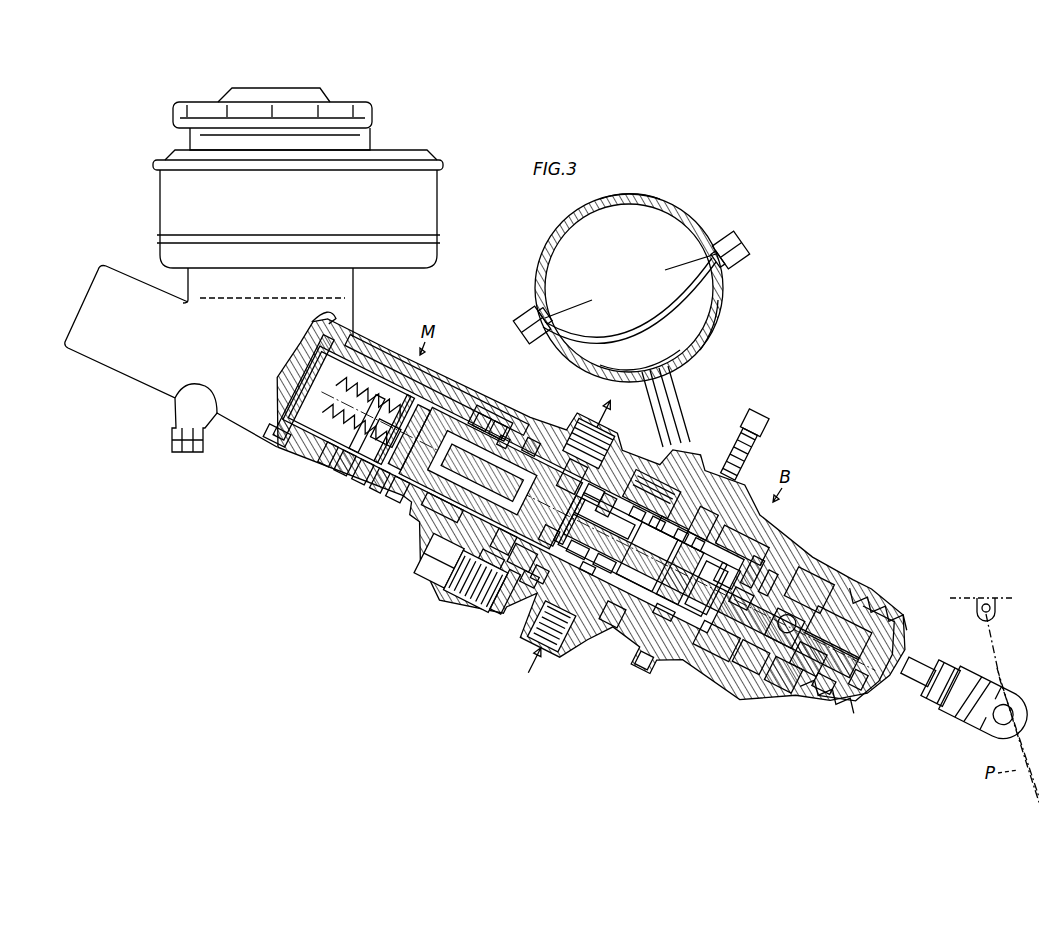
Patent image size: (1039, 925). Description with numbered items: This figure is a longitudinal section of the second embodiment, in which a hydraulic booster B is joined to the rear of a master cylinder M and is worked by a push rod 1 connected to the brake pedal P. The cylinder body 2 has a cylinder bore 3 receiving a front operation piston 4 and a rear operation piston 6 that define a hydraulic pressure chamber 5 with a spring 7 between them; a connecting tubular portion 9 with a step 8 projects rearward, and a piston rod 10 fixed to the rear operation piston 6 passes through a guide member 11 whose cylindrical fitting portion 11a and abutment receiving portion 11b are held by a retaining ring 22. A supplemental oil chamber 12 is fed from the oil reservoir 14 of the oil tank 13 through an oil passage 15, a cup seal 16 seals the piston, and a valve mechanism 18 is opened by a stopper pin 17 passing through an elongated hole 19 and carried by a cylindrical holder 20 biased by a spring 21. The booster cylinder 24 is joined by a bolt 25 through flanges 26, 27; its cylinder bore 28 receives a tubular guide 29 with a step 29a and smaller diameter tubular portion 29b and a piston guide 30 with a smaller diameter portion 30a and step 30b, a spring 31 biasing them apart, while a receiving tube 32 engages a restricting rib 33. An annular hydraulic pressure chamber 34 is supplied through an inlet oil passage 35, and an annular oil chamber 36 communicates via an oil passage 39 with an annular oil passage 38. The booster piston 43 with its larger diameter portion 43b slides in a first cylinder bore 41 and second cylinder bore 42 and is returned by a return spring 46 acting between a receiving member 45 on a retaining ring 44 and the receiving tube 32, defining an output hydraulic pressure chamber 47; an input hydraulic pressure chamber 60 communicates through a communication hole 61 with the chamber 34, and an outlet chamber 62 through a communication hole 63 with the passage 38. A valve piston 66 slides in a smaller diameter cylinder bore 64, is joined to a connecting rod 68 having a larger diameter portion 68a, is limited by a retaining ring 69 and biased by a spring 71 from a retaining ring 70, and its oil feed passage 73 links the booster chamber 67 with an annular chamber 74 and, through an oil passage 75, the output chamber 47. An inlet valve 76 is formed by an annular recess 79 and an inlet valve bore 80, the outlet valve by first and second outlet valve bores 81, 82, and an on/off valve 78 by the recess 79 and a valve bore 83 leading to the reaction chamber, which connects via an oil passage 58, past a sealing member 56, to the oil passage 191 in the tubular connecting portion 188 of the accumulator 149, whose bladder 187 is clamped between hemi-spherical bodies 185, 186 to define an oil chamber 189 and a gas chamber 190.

The push rod 1 is at (950, 672).
The cylinder body 2 is at (247, 420).
The cylinder bore 3 is at (280, 444).
The front operation piston 4 is at (288, 378).
The hydraulic pressure chamber 5 is at (349, 407).
The rear operation piston 6 is at (381, 484).
The spring 7 is at (350, 470).
The step 8 is at (418, 497).
The connecting tubular portion 9 is at (427, 527).
The piston rod 10 is at (490, 478).
The guide member 11 is at (506, 376).
The cylindrical fitting portion 11a is at (455, 395).
The abutment receiving portion 11b is at (478, 402).
The supplemental oil chamber 12 is at (396, 489).
The oil tank 13 is at (343, 313).
The oil reservoir 14 is at (322, 335).
The oil passage 15 is at (384, 364).
The cup seal 16 is at (364, 480).
The stopper pin 17 is at (410, 470).
The valve mechanism 18 is at (348, 402).
The elongated hole 19 is at (420, 458).
The cylindrical holder 20 is at (398, 420).
The spring 21 is at (426, 428).
The retaining ring 22 is at (497, 408).
The booster cylinder 24 is at (745, 521).
The bolt 25 is at (423, 578).
The flange 26 is at (472, 621).
The flange 27 is at (450, 611).
The cylinder bore 28 is at (607, 644).
The tubular guide 29 is at (534, 430).
The step 29a is at (494, 567).
The smaller diameter tubular portion 29b is at (454, 526).
The piston guide 30 is at (706, 655).
The smaller diameter portion 30a is at (535, 558).
The step 30b is at (684, 515).
The spring 31 is at (646, 653).
The receiving tube 32 is at (810, 564).
The restricting rib 33 is at (850, 595).
The annular hydraulic pressure chamber 34 is at (648, 482).
The inlet oil passage 35 is at (575, 636).
The annular oil chamber 36 is at (505, 594).
The annular oil passage 38 is at (544, 582).
The oil passage 39 is at (508, 546).
The first cylinder bore 41 is at (576, 452).
The second cylinder bore 42 is at (758, 536).
The booster piston 43 is at (770, 657).
The larger diameter portion 43b is at (732, 662).
The retaining ring 44 is at (892, 631).
The receiving member 45 is at (861, 692).
The return spring 46 is at (838, 697).
The output hydraulic pressure chamber 47 is at (775, 543).
The sealing member 56 is at (714, 436).
The oil passage 58 is at (722, 508).
The input hydraulic pressure chamber 60 is at (712, 595).
The communication hole 61 is at (606, 556).
The outlet chamber 62 is at (624, 490).
The communication hole 63 is at (593, 498).
The smaller diameter cylinder bore 64 is at (652, 568).
The valve piston 66 is at (655, 518).
The booster chamber 67 is at (546, 529).
The connecting rod 68 is at (785, 627).
The larger diameter portion 68a is at (809, 662).
The retaining ring 69 is at (850, 643).
The retaining ring 70 is at (564, 519).
The spring 71 is at (583, 555).
The oil feed passage 73 is at (580, 540).
The annular chamber 74 is at (709, 594).
The oil passage 75 is at (741, 586).
The inlet valve 76 is at (674, 627).
The on/off valve 78 is at (682, 583).
The annular recess 79 is at (697, 545).
The inlet valve bore 80 is at (677, 529).
The first outlet valve bore 81 is at (607, 568).
The second outlet valve bore 82 is at (637, 517).
The valve bore 83 is at (725, 567).
The accumulator 149 is at (706, 214).
The hemi-spherical body 185 is at (719, 305).
The hemi-spherical body 186 is at (648, 195).
The bladder 187 is at (632, 333).
The tubular connecting portion 188 is at (686, 388).
The oil chamber 189 is at (640, 355).
The gas chamber 190 is at (630, 285).
The oil passage 191 is at (668, 394).